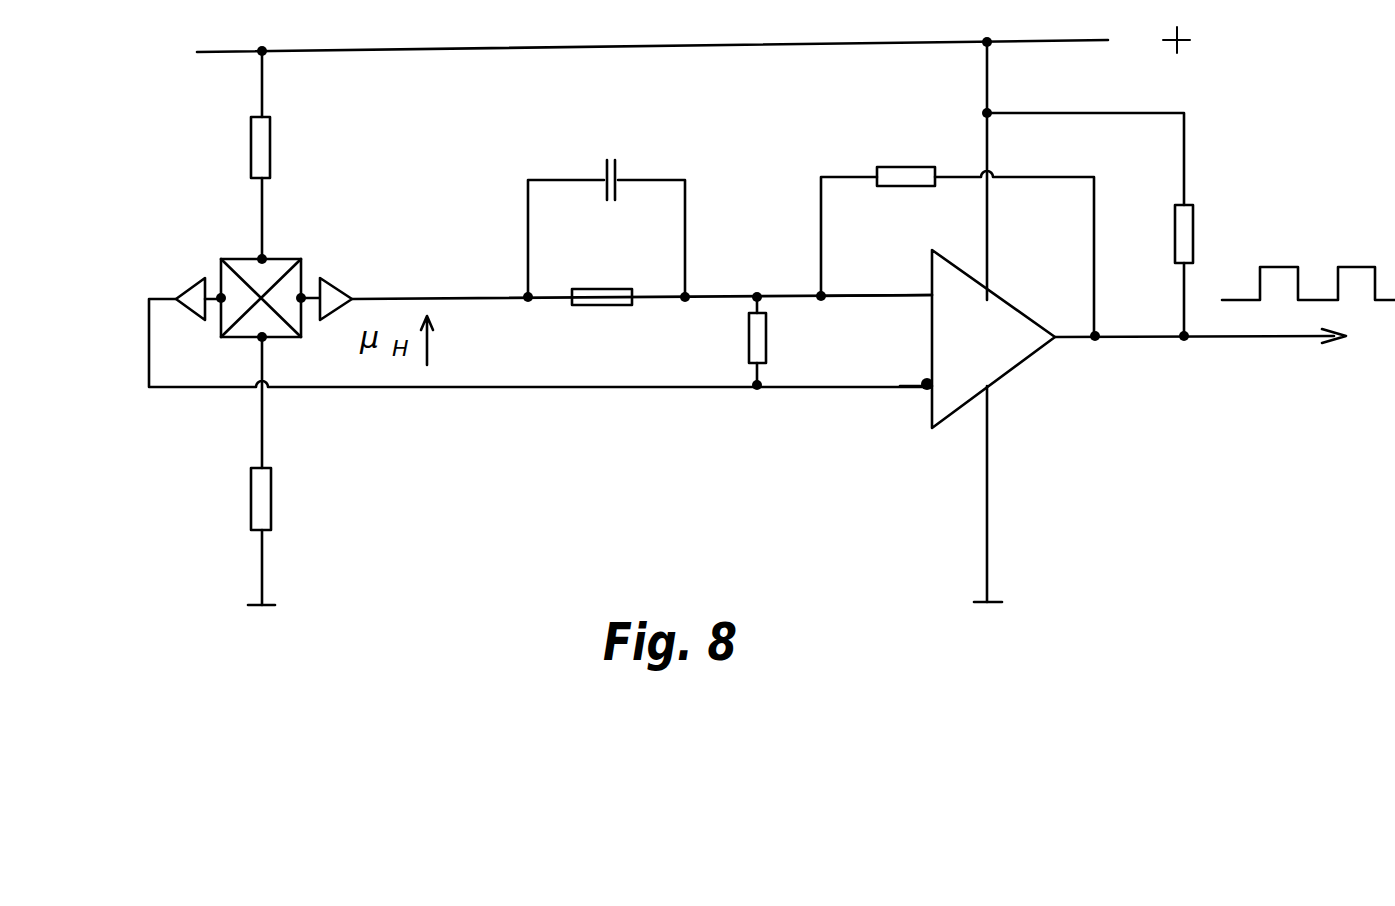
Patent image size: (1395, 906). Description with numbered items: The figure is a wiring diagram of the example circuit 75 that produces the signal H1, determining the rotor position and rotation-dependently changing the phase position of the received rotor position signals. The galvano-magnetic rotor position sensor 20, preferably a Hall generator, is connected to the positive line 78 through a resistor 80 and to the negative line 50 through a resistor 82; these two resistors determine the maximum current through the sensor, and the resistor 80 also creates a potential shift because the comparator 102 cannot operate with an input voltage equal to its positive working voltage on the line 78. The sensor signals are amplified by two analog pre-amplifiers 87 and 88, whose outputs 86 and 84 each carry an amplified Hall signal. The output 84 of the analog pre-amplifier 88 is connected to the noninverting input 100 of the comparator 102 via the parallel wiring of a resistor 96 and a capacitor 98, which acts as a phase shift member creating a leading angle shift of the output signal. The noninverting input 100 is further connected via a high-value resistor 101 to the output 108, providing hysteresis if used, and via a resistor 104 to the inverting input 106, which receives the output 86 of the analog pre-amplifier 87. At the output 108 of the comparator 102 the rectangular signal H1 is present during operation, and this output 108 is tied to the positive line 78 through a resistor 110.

The positive line 78 is at (395, 52).
The resistor 80 is at (270, 138).
The circuit 75 is at (474, 125).
The rotor position sensor 20 is at (282, 260).
The analog pre-amplifier 87 is at (197, 290).
The output 86 is at (157, 298).
The analog pre-amplifier 88 is at (337, 290).
The output 84 is at (400, 298).
The resistor 82 is at (271, 496).
The negative line 50 is at (262, 607).
The resistor 96 is at (609, 306).
The capacitor 98 is at (607, 152).
The resistor 104 is at (767, 338).
The high-value resistor 101 is at (898, 166).
The comparator 102 is at (1012, 368).
The noninverting input 100 is at (929, 293).
The inverting input 106 is at (918, 392).
The output 108 is at (1160, 336).
The resistor 110 is at (1193, 226).